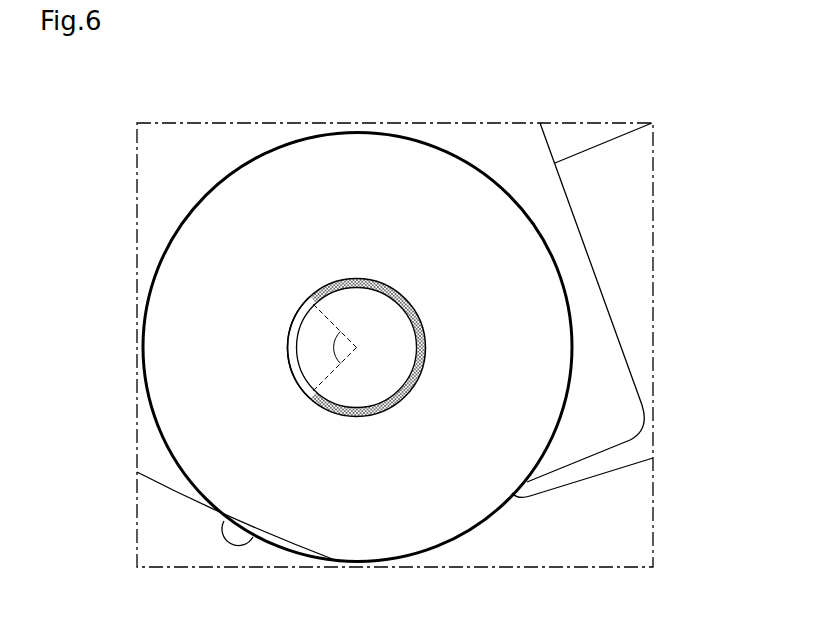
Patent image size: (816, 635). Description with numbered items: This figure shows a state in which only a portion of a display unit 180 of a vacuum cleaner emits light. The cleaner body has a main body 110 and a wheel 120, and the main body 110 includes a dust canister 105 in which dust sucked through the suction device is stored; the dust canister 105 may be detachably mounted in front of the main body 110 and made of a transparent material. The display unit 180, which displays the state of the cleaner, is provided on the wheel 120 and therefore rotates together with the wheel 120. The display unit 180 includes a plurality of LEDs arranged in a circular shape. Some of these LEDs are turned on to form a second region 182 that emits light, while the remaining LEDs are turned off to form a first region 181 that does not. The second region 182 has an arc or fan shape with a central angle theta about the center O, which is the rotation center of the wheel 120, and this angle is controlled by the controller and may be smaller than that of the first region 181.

The dust canister 105 is at (626, 198).
The main body 110 is at (160, 168).
The wheel 120 is at (348, 170).
The display unit 180 is at (263, 451).
The first region 181 is at (403, 393).
The second region 182 is at (290, 343).